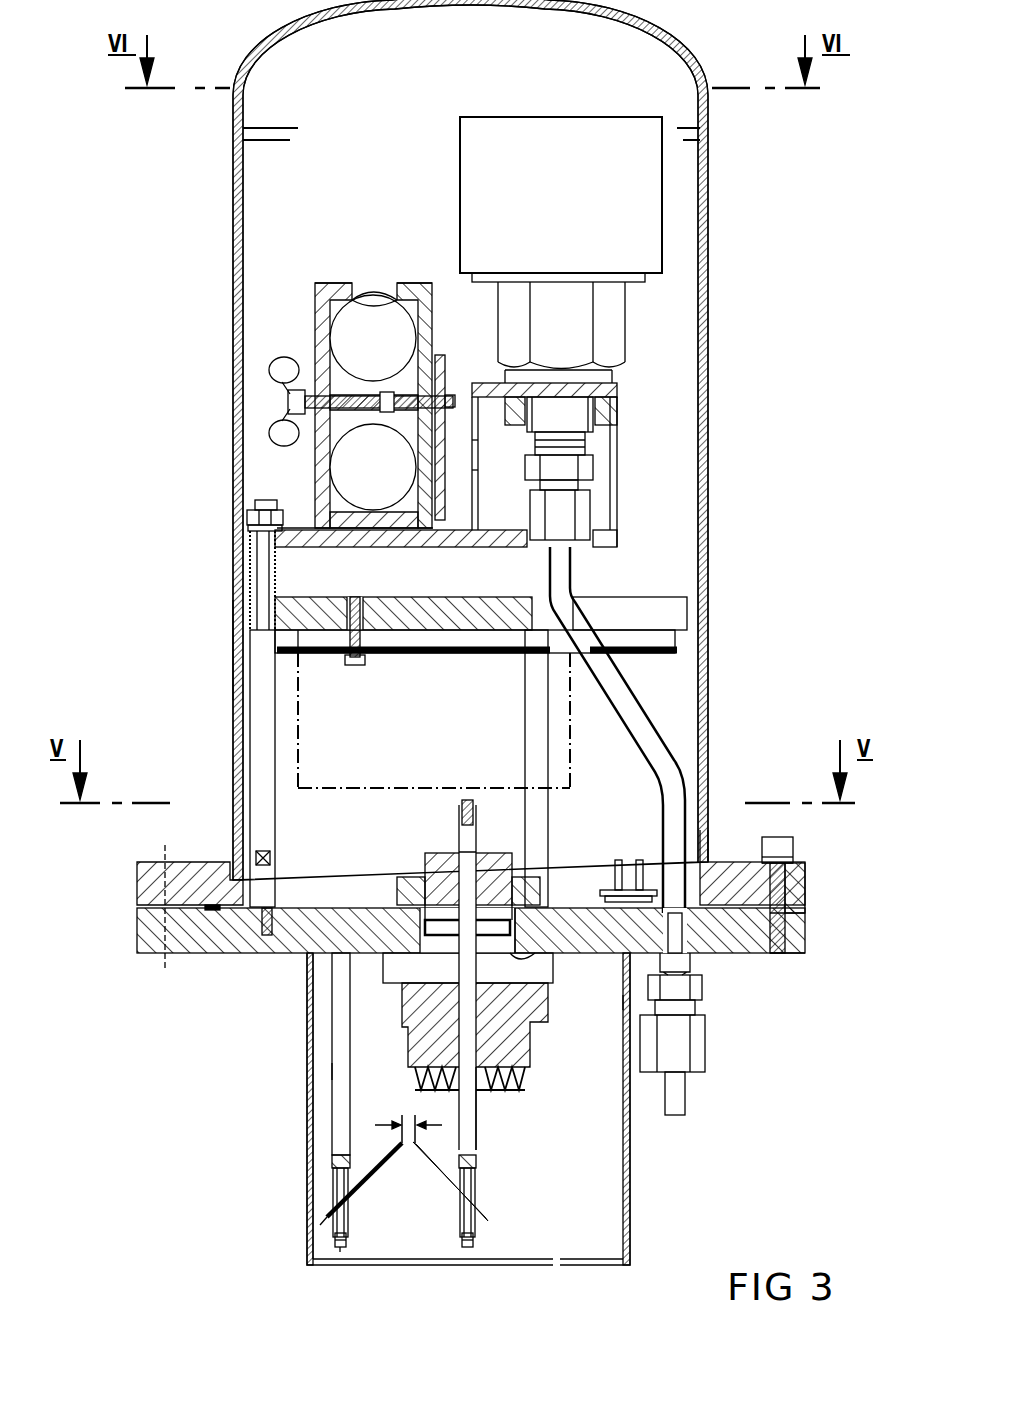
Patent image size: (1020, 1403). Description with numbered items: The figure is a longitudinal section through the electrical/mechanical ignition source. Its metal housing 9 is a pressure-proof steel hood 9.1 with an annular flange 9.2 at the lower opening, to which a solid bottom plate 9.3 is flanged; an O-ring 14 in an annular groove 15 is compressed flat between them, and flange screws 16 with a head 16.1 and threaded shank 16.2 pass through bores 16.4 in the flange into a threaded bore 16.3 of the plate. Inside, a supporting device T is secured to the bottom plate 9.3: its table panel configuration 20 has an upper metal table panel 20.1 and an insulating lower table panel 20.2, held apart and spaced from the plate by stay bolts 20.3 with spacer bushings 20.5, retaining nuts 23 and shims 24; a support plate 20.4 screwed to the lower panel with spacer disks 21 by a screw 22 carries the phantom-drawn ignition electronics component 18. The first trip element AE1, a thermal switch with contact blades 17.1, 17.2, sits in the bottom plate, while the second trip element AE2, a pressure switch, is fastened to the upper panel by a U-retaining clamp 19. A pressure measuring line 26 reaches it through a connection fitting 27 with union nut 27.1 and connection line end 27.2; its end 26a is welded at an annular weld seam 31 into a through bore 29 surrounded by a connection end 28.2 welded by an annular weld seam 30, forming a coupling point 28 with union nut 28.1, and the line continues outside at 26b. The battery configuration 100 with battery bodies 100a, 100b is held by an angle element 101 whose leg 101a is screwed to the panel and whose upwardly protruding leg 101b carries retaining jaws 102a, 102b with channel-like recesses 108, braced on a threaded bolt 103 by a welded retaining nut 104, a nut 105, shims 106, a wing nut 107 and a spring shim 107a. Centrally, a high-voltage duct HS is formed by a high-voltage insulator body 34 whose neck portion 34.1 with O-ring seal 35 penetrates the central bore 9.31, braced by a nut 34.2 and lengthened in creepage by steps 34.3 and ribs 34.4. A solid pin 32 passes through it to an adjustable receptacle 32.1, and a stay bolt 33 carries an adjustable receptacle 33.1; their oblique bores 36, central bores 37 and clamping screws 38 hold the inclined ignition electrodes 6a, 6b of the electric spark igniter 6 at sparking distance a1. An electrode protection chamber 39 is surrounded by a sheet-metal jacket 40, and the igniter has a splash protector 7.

The metal housing 9 is at (445, 891).
The pressure-proof steel hood 9.1 is at (232, 188).
The annular flange 9.2 is at (137, 882).
The solid bottom plate 9.3 is at (137, 928).
The central bore 9.31 is at (520, 940).
The supporting device T is at (231, 697).
The annular weld seam 31 is at (706, 850).
The second trip element AE2 is at (460, 170).
The U-retaining clamp 19 is at (598, 390).
The table panel configuration 20 is at (508, 735).
The upper metal table panel 20.1 is at (605, 547).
The lower table panel 20.2 is at (688, 612).
The stay bolts 20.3 is at (292, 762).
The support plate 20.4 is at (422, 656).
The spacer bushings 20.5 is at (248, 571).
The spacer disks 21 is at (348, 660).
The screw 22 is at (357, 665).
The retaining nuts 23 is at (247, 510).
The shims 24 is at (248, 528).
The pressure measuring line 26 is at (622, 710).
The end of the measuring line 26a is at (665, 960).
The pipe outlet 26b is at (684, 1090).
The connection fitting 27 is at (601, 468).
The union nut 27.1 is at (588, 512).
The connection line end 27.2 is at (592, 470).
The coupling point 28 is at (659, 1039).
The union nut 28.1 is at (645, 1045).
The connection end 28.2 is at (650, 990).
The through bore 29 is at (690, 962).
The annular weld seam 30 is at (623, 1000).
The solid pin 32 is at (460, 822).
The adjustable receptacle 32.1 is at (478, 1192).
The stay bolt 33 is at (332, 1030).
The adjustable receptacle 33.1 is at (333, 1165).
The high-voltage insulator body 34 is at (425, 1040).
The neck portion 34.1 is at (405, 905).
The nut 34.2 is at (398, 877).
The steps 34.3 is at (508, 1108).
The ribs 34.4 is at (330, 1072).
The O-ring seal 35 is at (398, 976).
The oblique bores 36 is at (352, 1225).
The central bores 37 is at (333, 1158).
The clamping screws 38 is at (325, 1230).
The electrode protection chamber 39 is at (412, 1076).
The sheet-metal jacket 40 is at (310, 1002).
The electric spark igniter 6 is at (369, 1190).
The ignition electrode 6a is at (448, 1205).
The counter-electrode 6b is at (320, 1212).
The gas-permeable splash protector 7 is at (630, 1175).
The sparking distance a1 is at (408, 1114).
The O-ring 14 is at (212, 912).
The annular groove 15 is at (210, 922).
The flange screw 16 is at (158, 962).
The head 16.1 is at (795, 855).
The threaded shank 16.2 is at (800, 928).
The threaded bore 16.3 is at (785, 953).
The through bores 16.4 is at (805, 880).
The contact blade 17.1 is at (618, 860).
The contact blade 17.2 is at (640, 860).
The ignition electronics component 18 is at (345, 790).
The first trip element AE1 is at (608, 840).
The high-voltage duct HS is at (440, 859).
The long-term battery configuration 100 is at (370, 393).
The battery body 100a is at (373, 338).
The battery body 100b is at (373, 467).
The angle element 101 is at (442, 548).
The leg 101a is at (345, 548).
The upwardly protruding leg 101b is at (440, 355).
The retaining jaw 102a is at (318, 288).
The retaining jaw 102b is at (400, 290).
The threaded bolt 103 is at (312, 448).
The retaining nut 104 is at (448, 395).
The nut 105 is at (448, 484).
The shims 106 is at (448, 446).
The wing nut 107 is at (280, 368).
The spring shim 107a is at (286, 370).
The channel-like recesses 108 is at (372, 298).